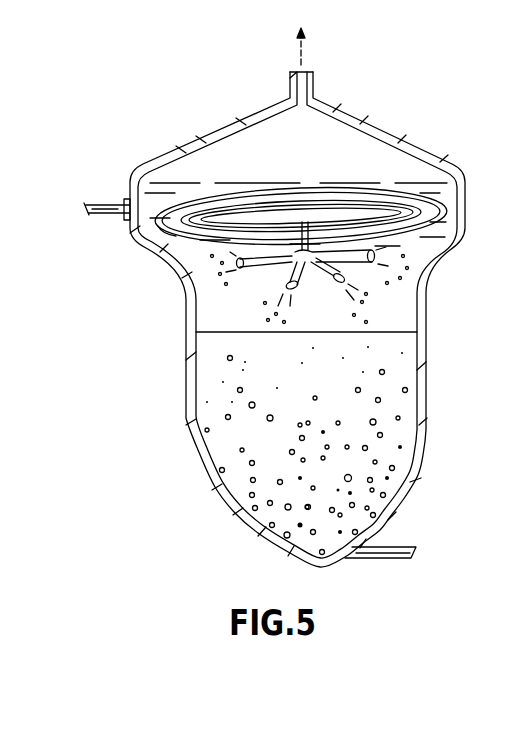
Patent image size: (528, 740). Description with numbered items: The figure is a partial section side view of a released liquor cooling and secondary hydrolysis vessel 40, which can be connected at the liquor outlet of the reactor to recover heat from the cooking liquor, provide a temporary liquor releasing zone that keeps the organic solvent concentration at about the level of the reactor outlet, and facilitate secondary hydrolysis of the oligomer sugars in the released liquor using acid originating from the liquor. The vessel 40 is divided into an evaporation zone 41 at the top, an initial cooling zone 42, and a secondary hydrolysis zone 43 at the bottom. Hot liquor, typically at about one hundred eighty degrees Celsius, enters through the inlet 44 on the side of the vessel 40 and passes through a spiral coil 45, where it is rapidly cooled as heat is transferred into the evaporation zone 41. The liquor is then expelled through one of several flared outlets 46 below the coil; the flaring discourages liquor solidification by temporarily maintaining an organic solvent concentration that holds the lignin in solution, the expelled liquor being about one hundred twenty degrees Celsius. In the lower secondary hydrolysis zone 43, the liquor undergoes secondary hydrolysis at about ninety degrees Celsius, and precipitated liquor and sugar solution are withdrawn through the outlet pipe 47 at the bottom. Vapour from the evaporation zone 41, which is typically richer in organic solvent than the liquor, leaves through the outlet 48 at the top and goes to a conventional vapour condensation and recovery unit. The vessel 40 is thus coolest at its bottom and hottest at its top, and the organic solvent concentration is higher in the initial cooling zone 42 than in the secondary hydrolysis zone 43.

The cooling and secondary hydrolysis vessel 40 is at (418, 149).
The evaporation zone 41 is at (233, 155).
The initial cooling zone 42 is at (452, 213).
The secondary hydrolysis zone 43 is at (233, 447).
The inlet 44 is at (121, 206).
The spiral coil 45 is at (185, 232).
The flared outlets 46 is at (283, 278).
The outlet pipe 47 is at (398, 547).
The outlet 48 is at (318, 81).